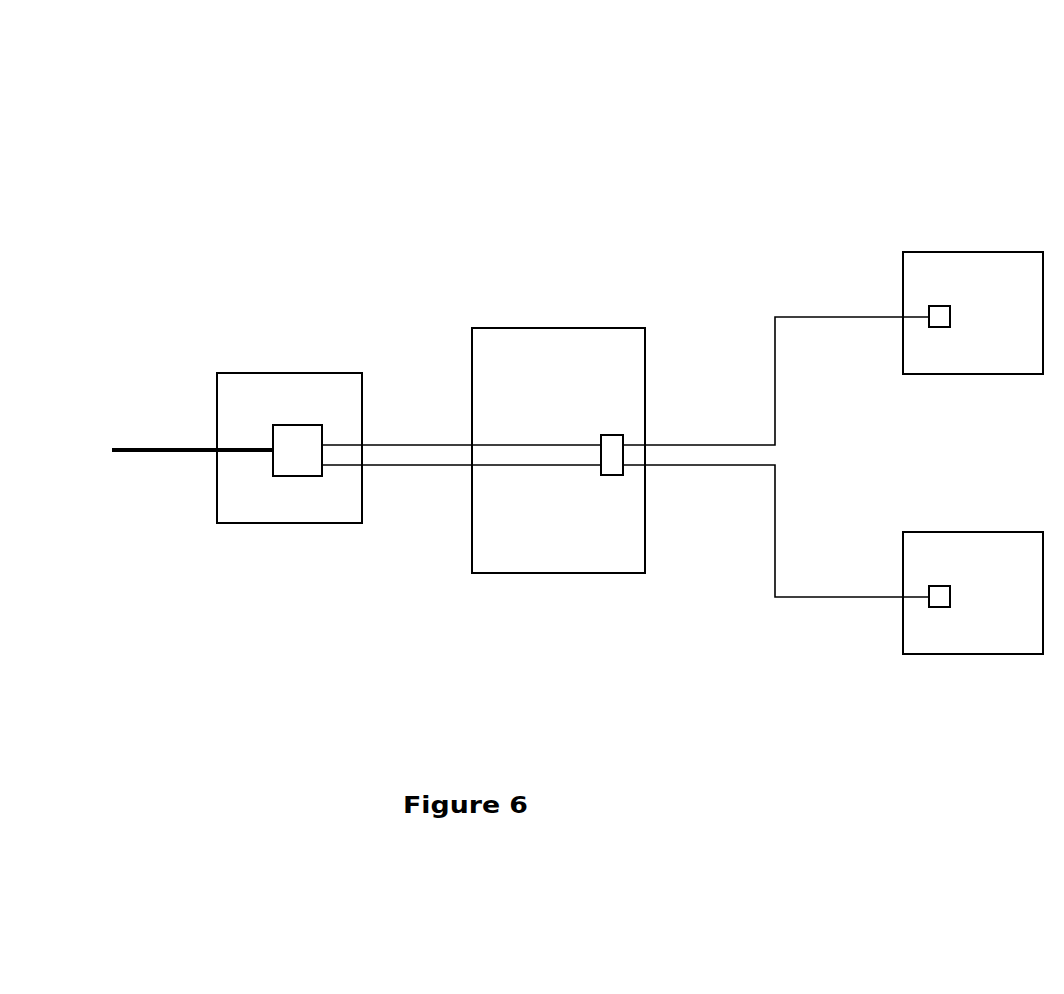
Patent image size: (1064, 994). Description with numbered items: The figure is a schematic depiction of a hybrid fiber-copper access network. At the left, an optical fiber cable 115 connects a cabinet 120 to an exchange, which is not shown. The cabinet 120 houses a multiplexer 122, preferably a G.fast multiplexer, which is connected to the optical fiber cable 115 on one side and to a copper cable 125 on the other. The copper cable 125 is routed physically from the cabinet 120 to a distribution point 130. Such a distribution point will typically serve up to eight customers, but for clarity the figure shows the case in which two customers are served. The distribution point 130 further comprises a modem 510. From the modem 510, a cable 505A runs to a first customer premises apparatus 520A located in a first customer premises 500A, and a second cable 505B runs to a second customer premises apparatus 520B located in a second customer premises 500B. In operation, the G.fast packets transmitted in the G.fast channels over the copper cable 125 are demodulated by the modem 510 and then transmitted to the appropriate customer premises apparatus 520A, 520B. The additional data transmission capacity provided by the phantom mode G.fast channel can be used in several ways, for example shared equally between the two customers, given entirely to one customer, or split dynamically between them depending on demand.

The optical fiber cable 115 is at (143, 452).
The cabinet 120 is at (290, 372).
The multiplexer 122 is at (296, 478).
The copper cable 125 is at (415, 445).
The distribution point 130 is at (561, 575).
The modem 510 is at (612, 436).
The cable 505A is at (716, 446).
The cable 505B is at (774, 540).
The first customer premises 500A is at (972, 251).
The second customer premises 500B is at (972, 655).
The first customer premises apparatus 520A is at (935, 309).
The second customer premises apparatus 520B is at (938, 609).